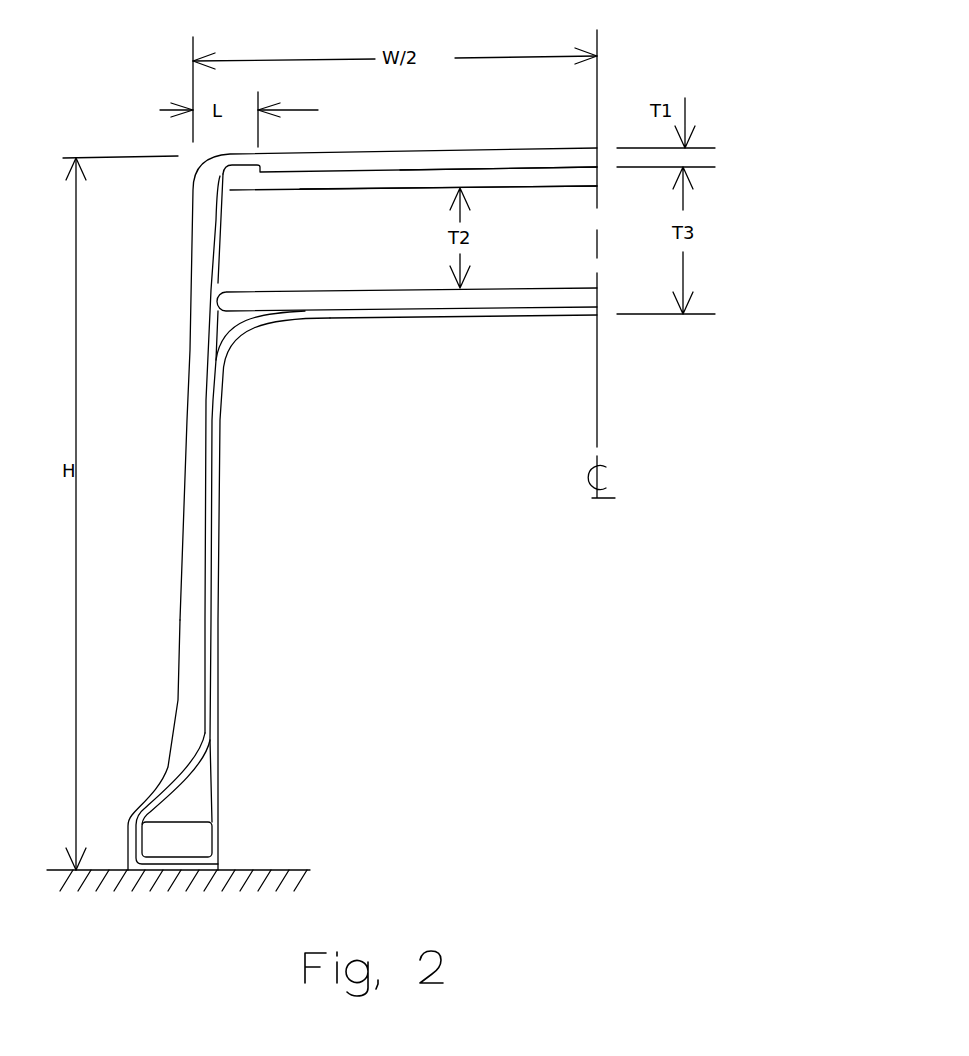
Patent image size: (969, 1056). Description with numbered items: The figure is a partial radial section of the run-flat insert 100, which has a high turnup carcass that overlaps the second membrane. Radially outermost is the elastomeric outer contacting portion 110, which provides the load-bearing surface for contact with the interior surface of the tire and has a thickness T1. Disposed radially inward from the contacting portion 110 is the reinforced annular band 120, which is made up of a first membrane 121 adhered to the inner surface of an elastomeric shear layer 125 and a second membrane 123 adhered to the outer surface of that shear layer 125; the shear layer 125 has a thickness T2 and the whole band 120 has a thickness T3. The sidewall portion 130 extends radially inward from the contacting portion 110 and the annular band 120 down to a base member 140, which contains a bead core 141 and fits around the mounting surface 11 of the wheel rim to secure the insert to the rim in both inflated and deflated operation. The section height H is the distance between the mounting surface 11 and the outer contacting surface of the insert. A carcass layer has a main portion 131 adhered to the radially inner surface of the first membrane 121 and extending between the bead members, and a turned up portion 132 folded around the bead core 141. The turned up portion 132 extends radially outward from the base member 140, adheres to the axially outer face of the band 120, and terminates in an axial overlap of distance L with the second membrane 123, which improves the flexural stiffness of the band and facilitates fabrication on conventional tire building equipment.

The run-flat insert 100 is at (448, 562).
The outer contacting portion 110 is at (430, 153).
The reinforced annular band 120 is at (742, 146).
The first membrane 121 is at (547, 297).
The second membrane 123 is at (555, 178).
The shear layer 125 is at (552, 235).
The sidewall portion 130 is at (153, 313).
The main portion of carcass layer 131 is at (220, 565).
The turned up portion of carcass layer 132 is at (212, 482).
The base member 140 is at (325, 730).
The bead core 141 is at (182, 833).
The mounting surface of the wheel 11 is at (243, 868).